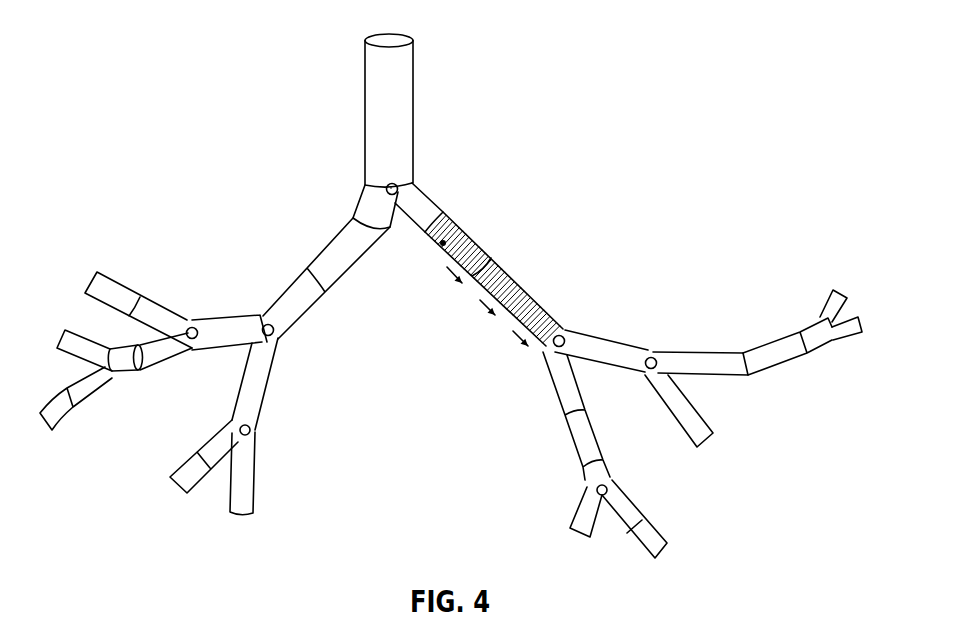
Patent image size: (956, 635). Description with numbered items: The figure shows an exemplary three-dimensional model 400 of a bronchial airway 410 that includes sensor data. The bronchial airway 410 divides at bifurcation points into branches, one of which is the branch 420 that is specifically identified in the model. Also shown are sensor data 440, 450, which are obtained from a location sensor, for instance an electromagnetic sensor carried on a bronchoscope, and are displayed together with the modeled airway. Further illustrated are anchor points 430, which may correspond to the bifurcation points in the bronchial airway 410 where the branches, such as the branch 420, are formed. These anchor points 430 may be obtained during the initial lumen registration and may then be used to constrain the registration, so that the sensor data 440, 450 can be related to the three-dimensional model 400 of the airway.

The 3D model 400 is at (208, 130).
The bronchial airway 410 is at (412, 105).
The branch 420 is at (505, 268).
The anchor points 430 is at (396, 185).
The sensor data 440 is at (441, 250).
The sensor data 450 is at (468, 278).